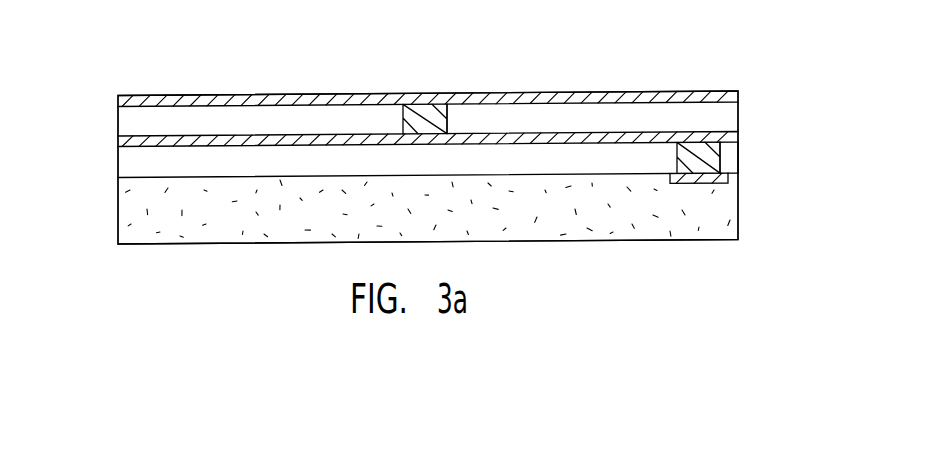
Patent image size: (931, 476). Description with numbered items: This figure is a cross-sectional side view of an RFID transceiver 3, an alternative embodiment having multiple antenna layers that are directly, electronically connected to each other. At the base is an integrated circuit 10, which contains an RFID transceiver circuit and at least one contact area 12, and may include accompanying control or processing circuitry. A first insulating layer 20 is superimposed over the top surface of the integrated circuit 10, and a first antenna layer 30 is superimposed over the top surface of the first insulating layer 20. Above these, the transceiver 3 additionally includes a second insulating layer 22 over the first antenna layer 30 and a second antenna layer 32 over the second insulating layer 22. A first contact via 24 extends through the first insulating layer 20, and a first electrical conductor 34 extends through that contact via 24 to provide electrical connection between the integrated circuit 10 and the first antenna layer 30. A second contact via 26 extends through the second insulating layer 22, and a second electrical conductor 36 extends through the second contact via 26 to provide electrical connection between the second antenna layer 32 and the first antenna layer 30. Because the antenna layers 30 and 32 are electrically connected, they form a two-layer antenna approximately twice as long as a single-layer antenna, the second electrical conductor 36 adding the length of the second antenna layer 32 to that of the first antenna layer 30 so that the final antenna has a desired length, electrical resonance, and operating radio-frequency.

The RFID transceiver 3 is at (693, 38).
The integrated circuit 10 is at (128, 220).
The contact area 12 is at (722, 178).
The first insulating layer 20 is at (128, 160).
The second insulating layer 22 is at (128, 117).
The first contact via 24 is at (722, 146).
The second contact via 26 is at (448, 120).
The first antenna layer 30 is at (122, 140).
The second antenna layer 32 is at (187, 95).
The first electrical conductor 34 is at (713, 152).
The second electrical conductor 36 is at (427, 110).